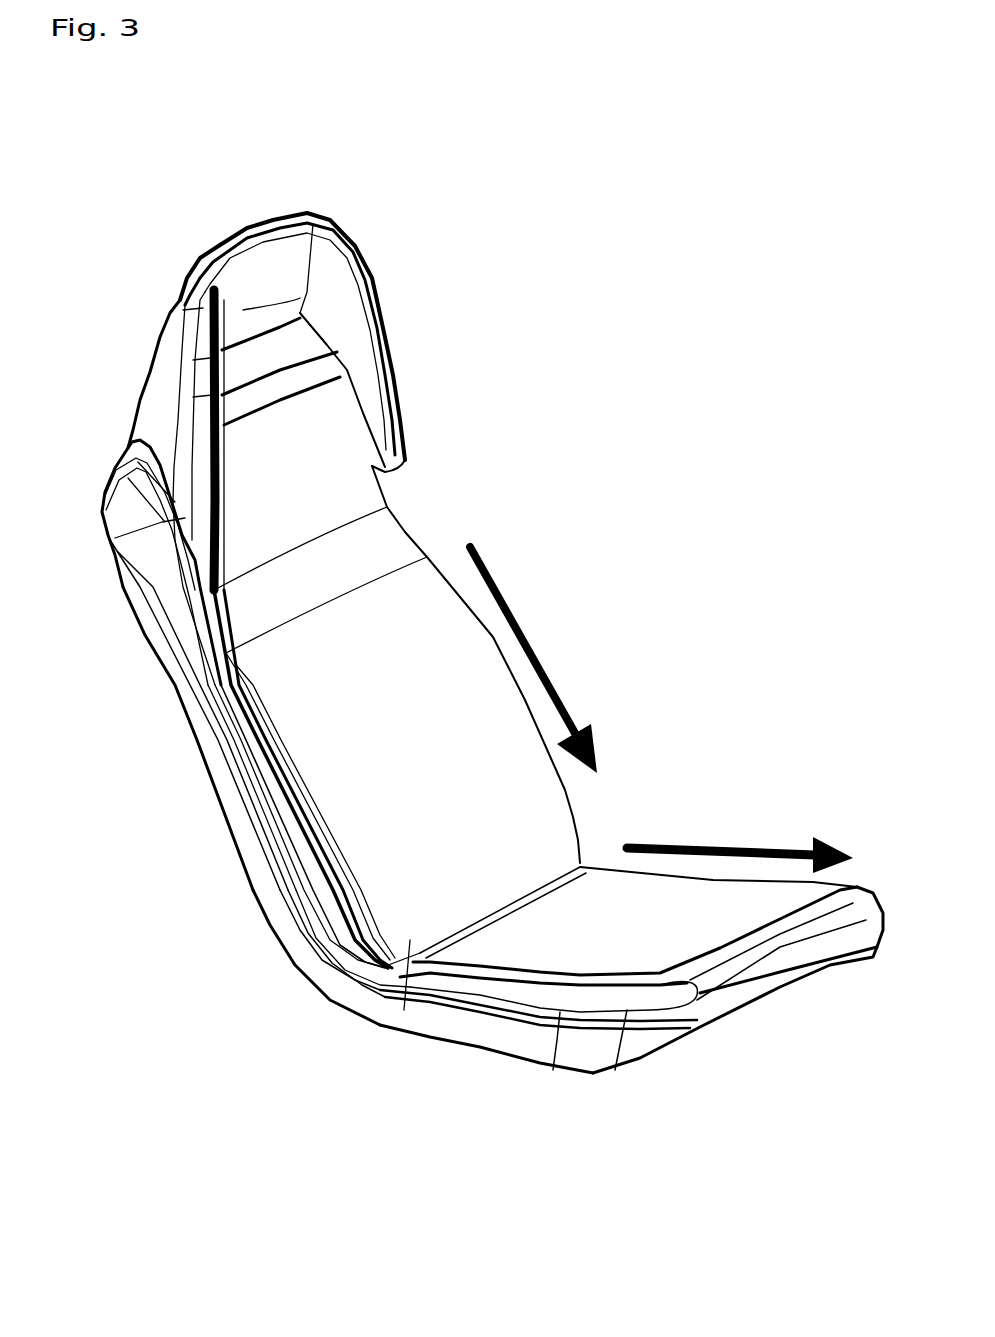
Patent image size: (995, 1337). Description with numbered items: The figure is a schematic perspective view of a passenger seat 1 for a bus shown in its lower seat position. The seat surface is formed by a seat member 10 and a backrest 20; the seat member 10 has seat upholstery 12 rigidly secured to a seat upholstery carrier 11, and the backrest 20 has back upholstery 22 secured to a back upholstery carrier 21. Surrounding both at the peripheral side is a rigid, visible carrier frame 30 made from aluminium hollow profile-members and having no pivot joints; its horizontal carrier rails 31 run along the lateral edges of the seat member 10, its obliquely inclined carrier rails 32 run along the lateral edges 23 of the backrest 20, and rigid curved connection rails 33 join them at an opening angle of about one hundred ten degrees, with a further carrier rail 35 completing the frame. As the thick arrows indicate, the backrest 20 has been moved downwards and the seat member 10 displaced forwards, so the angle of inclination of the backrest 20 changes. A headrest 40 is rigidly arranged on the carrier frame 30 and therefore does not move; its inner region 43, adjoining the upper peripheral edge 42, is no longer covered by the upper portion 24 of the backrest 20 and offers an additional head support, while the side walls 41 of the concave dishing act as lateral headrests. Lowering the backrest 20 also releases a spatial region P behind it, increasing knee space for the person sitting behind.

The passenger seat 1 is at (452, 1041).
The seat member 10 is at (766, 832).
The seat upholstery carrier 11 is at (640, 1063).
The seat upholstery 12 is at (640, 887).
The backrest 20 is at (525, 548).
The back upholstery carrier 21 is at (267, 790).
The back upholstery 22 is at (467, 652).
The lateral edges 23 is at (404, 1010).
The upper portion 24 is at (333, 433).
The carrier frame 30 is at (266, 973).
The carrier rails 31 is at (523, 1050).
The carrier rails 32 is at (200, 740).
The connection rails 33 is at (327, 985).
The carrier rail 35 is at (660, 1040).
The headrest 40 is at (216, 181).
The side walls 41 is at (157, 410).
The upper peripheral edge 42 is at (207, 254).
The inner region 43 is at (313, 287).
The region P is at (290, 898).